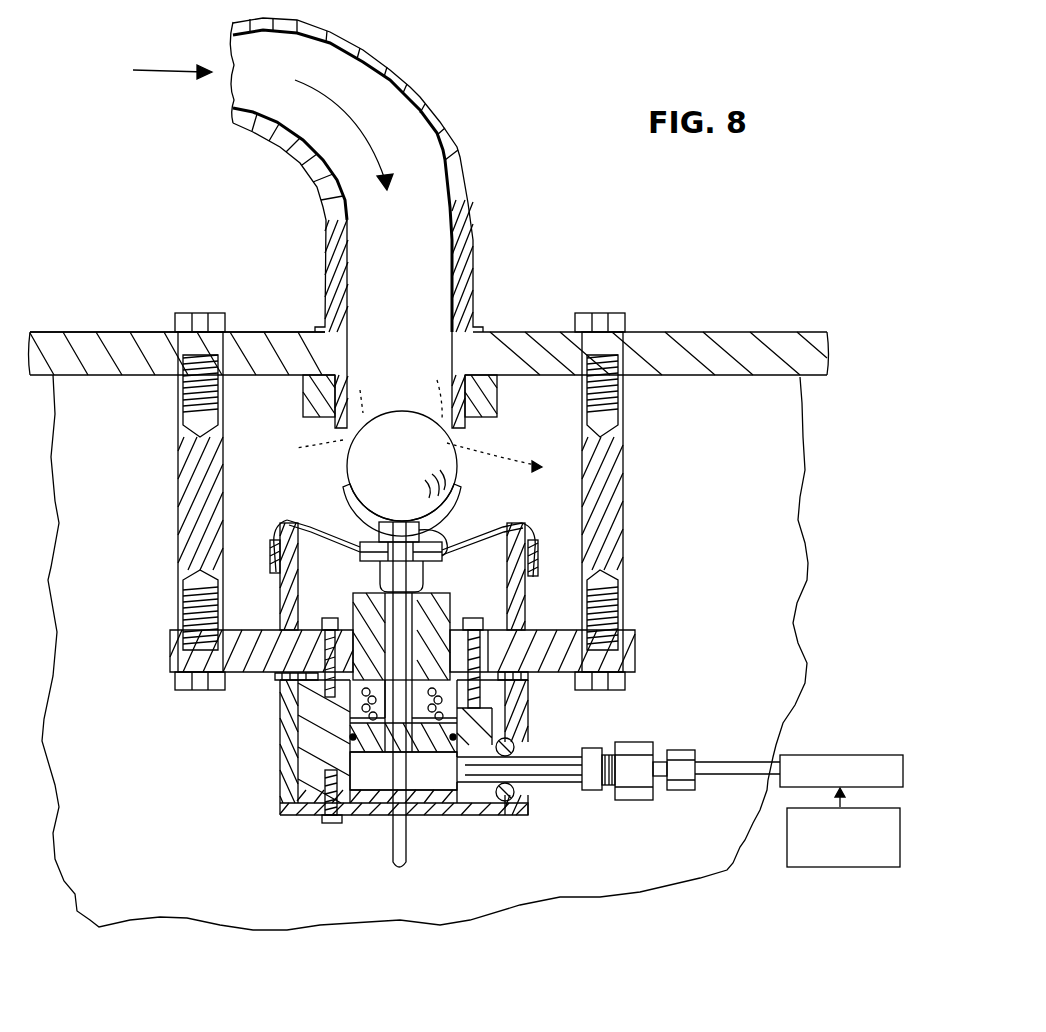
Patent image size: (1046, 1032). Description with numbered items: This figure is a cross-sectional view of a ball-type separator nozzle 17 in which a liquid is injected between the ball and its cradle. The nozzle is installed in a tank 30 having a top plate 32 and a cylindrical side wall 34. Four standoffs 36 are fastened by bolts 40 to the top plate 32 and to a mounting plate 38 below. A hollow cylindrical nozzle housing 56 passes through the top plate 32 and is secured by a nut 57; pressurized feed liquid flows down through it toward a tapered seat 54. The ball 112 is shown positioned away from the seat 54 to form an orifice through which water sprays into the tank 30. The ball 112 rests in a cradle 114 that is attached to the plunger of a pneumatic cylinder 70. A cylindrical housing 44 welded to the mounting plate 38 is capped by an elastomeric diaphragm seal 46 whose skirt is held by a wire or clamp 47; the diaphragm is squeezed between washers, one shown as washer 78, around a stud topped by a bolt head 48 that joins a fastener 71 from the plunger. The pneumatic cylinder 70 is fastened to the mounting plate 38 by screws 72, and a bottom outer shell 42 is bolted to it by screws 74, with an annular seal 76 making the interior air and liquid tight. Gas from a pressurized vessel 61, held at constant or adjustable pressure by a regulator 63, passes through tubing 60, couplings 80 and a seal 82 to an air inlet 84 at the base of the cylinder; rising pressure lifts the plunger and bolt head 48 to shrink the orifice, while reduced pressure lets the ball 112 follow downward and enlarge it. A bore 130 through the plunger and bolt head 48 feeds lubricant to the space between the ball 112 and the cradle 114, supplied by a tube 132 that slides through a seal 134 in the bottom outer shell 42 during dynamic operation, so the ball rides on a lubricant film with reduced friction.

The separator nozzle 17 is at (672, 487).
The tank 30 is at (818, 318).
The top plate 32 is at (695, 331).
The cylindrical side wall 34 is at (790, 497).
The standoffs 36 is at (178, 508).
The mounting plate 38 is at (258, 680).
The bolts 40 is at (200, 313).
The bottom outer shell 42 is at (355, 816).
The cylindrical housing 44 is at (280, 600).
The diaphragm seal 46 is at (478, 527).
The wire or clamp 47 is at (538, 560).
The bolt head 48 is at (448, 556).
The tapered seat 54 is at (405, 426).
The cylindrical nozzle housing 56 is at (473, 230).
The nut 57 is at (497, 396).
The tubing 60 is at (720, 760).
The pressurized vessel 61 is at (850, 868).
The regulator 63 is at (845, 755).
The pneumatic cylinder 70 is at (313, 753).
The fastener 71 is at (380, 575).
The screws 72 is at (330, 618).
The screws 74 is at (325, 823).
The annular seal 76 is at (530, 685).
The washer 78 is at (360, 553).
The couplings 80 is at (652, 731).
The seal 82 is at (535, 796).
The air inlet 84 is at (470, 790).
The ball 112 is at (345, 476).
The cradle 114 is at (340, 498).
The bore 130 is at (395, 622).
The tube 132 is at (407, 866).
The seal 134 is at (407, 806).